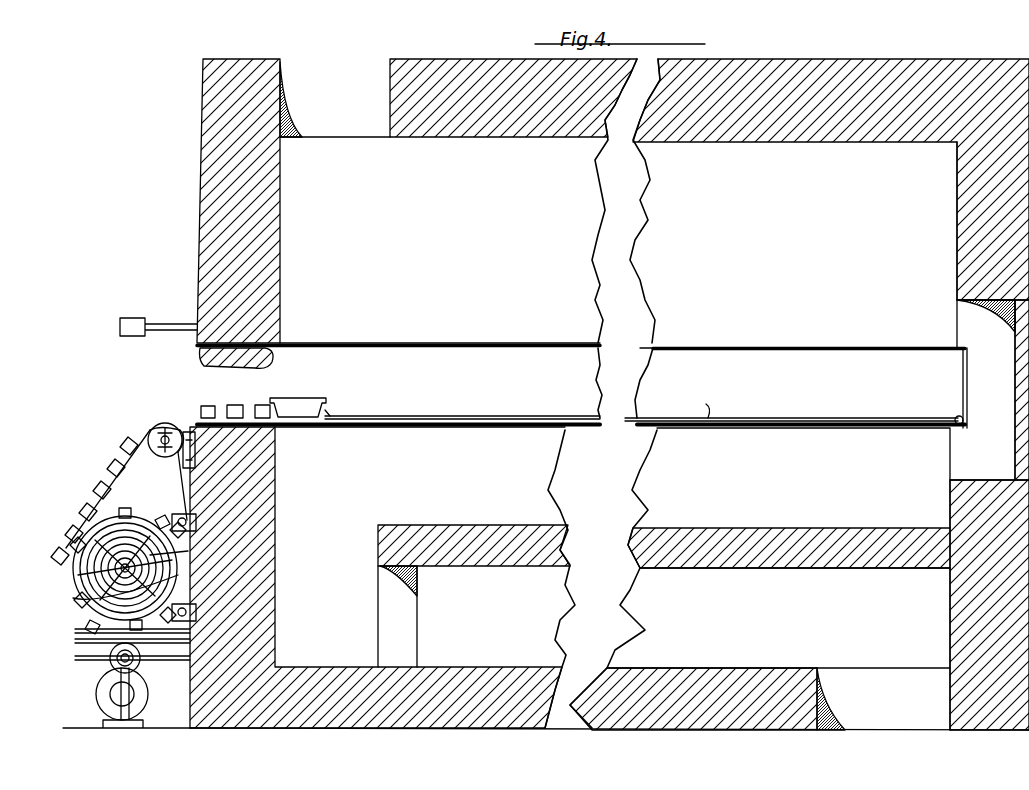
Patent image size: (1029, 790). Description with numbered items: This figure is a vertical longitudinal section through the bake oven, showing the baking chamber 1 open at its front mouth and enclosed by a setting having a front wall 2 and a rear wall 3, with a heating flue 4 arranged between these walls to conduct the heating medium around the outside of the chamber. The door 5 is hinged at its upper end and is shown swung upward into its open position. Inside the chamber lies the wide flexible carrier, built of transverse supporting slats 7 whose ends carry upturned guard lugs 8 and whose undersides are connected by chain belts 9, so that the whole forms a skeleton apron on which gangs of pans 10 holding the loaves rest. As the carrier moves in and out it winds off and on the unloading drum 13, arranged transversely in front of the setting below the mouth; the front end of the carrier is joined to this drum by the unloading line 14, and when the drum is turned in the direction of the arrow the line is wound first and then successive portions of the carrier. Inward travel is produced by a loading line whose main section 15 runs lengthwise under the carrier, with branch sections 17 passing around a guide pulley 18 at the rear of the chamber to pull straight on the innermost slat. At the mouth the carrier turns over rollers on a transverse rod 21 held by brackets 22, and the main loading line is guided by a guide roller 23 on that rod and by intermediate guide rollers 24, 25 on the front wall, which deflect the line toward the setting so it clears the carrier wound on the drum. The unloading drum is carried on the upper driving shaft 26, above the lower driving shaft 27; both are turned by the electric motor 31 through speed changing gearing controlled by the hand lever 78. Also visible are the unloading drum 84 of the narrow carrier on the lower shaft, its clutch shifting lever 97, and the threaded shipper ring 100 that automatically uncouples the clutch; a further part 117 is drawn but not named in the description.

The baking chamber 1 is at (558, 385).
The front wall 2 is at (198, 212).
The rear wall 3 is at (960, 247).
The heating flue 4 is at (722, 299).
The door 5 is at (272, 360).
The supporting slats 7 is at (105, 476).
The guard lugs 8 is at (122, 436).
The chain belts 9 is at (249, 412).
The pans 10 is at (298, 404).
The unloading drum 13 is at (70, 598).
The unloading line 14 is at (72, 568).
The main loading line 15 is at (170, 480).
The branch loading lines 17 is at (702, 407).
The guide pulley 18 is at (956, 418).
The rod 21 is at (150, 430).
The brackets 22 is at (190, 446).
The guide roller 23 is at (166, 422).
The intermediate guide roller 24 is at (196, 519).
The intermediate guide roller 25 is at (196, 605).
The upper driving shaft 26 is at (190, 556).
The lower driving shaft 27 is at (118, 666).
The electric motor 31 is at (147, 700).
The hand lever 78 is at (75, 631).
The unloading drum 84 is at (140, 665).
The shifting lever 97 is at (78, 658).
The shipper ring 100 is at (118, 690).
The bar 117 is at (78, 641).